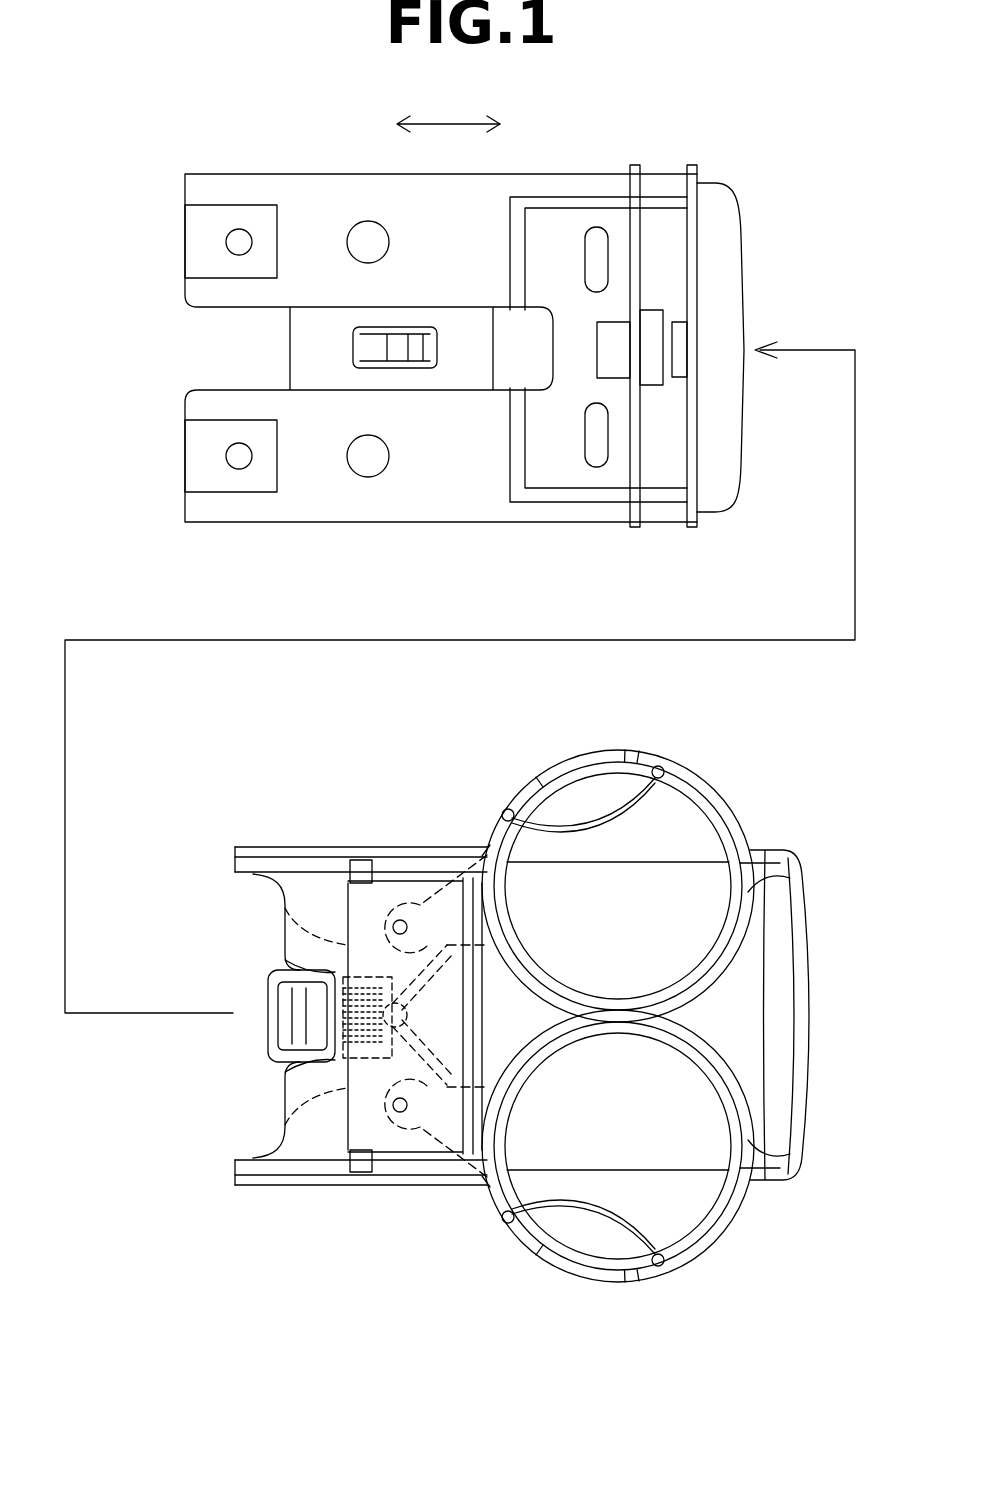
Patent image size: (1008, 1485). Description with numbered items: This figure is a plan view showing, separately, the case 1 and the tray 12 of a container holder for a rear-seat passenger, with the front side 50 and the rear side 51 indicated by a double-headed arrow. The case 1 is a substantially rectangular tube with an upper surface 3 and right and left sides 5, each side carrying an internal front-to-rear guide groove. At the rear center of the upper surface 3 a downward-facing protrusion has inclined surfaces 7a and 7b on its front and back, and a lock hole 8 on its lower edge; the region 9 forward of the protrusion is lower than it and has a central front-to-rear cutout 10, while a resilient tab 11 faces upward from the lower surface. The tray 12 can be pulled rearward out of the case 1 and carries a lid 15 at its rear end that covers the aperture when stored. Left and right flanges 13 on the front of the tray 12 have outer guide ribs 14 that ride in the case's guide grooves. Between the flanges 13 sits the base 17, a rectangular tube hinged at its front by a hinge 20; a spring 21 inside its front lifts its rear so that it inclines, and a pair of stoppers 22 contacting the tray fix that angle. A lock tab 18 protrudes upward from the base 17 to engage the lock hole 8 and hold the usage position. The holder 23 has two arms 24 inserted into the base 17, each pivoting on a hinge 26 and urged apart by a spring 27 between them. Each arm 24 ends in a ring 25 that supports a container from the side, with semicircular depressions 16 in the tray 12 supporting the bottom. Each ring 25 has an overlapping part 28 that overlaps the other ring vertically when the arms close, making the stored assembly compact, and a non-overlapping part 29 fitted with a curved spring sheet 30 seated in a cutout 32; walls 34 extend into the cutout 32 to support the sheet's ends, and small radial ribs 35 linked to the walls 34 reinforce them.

The case 1 is at (307, 142).
The front side 50 is at (425, 123).
The rear side 51 is at (515, 123).
The right and left sides 5 is at (573, 174).
The inclined surface 7a is at (608, 322).
The inclined surface 7b is at (680, 345).
The lock hole 8 is at (652, 315).
The cutout 10 is at (237, 312).
The region 9 is at (400, 487).
The resilient tab 11 is at (422, 354).
The upper surface 3 is at (570, 470).
The tray 12 is at (841, 976).
The flanges 13 is at (290, 858).
The guide rib 14 is at (240, 845).
The base 17 is at (348, 905).
The stoppers 22 is at (330, 968).
The lock tab 18 is at (310, 1020).
The spring 21 is at (312, 1100).
The hinge 20 is at (356, 862).
The hinge 26 is at (400, 920).
The arm 24 is at (430, 880).
The spring 27 is at (402, 1015).
The depressions 16 is at (733, 860).
The cutout 32 is at (547, 762).
The overlapping part 28 is at (620, 1002).
The holder 23 is at (735, 750).
The spring sheet 30 is at (602, 755).
The wall 34 is at (508, 808).
The ribs 35 is at (563, 823).
The non-overlapping part 29 is at (484, 830).
The lid 15 is at (808, 1062).
The ring 25 is at (792, 888).